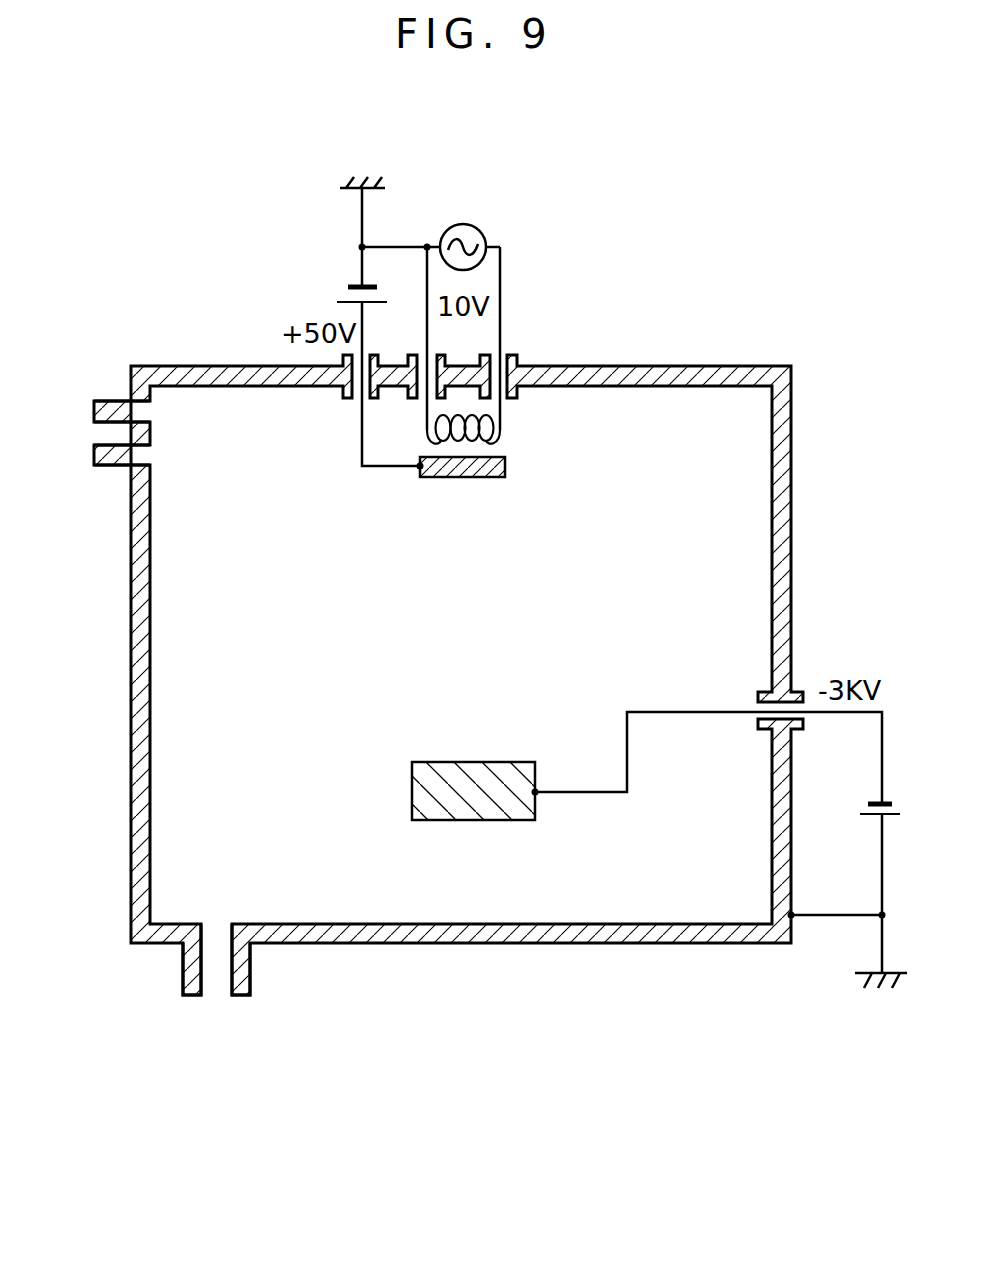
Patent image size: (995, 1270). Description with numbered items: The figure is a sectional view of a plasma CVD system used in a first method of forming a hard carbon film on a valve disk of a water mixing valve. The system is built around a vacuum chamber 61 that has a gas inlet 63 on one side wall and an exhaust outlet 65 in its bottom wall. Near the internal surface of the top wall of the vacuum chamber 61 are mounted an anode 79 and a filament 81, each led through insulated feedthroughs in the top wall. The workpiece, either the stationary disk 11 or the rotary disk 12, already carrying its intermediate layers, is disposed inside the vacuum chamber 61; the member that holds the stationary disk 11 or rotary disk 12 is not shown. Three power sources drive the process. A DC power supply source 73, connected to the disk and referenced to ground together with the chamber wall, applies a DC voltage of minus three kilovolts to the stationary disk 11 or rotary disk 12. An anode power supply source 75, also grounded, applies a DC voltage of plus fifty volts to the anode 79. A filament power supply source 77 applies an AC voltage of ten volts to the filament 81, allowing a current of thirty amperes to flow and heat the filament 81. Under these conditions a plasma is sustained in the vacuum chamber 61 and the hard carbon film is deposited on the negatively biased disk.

The stationary disk 11 is at (474, 748).
The rotary disk 12 is at (465, 776).
The vacuum chamber 61 is at (565, 946).
The gas inlet 63 is at (108, 436).
The exhaust outlet 65 is at (212, 990).
The DC power supply source 73 is at (870, 820).
The anode power supply source 75 is at (340, 294).
The filament power supply source 77 is at (478, 226).
The anode 79 is at (467, 480).
The filament 81 is at (502, 425).